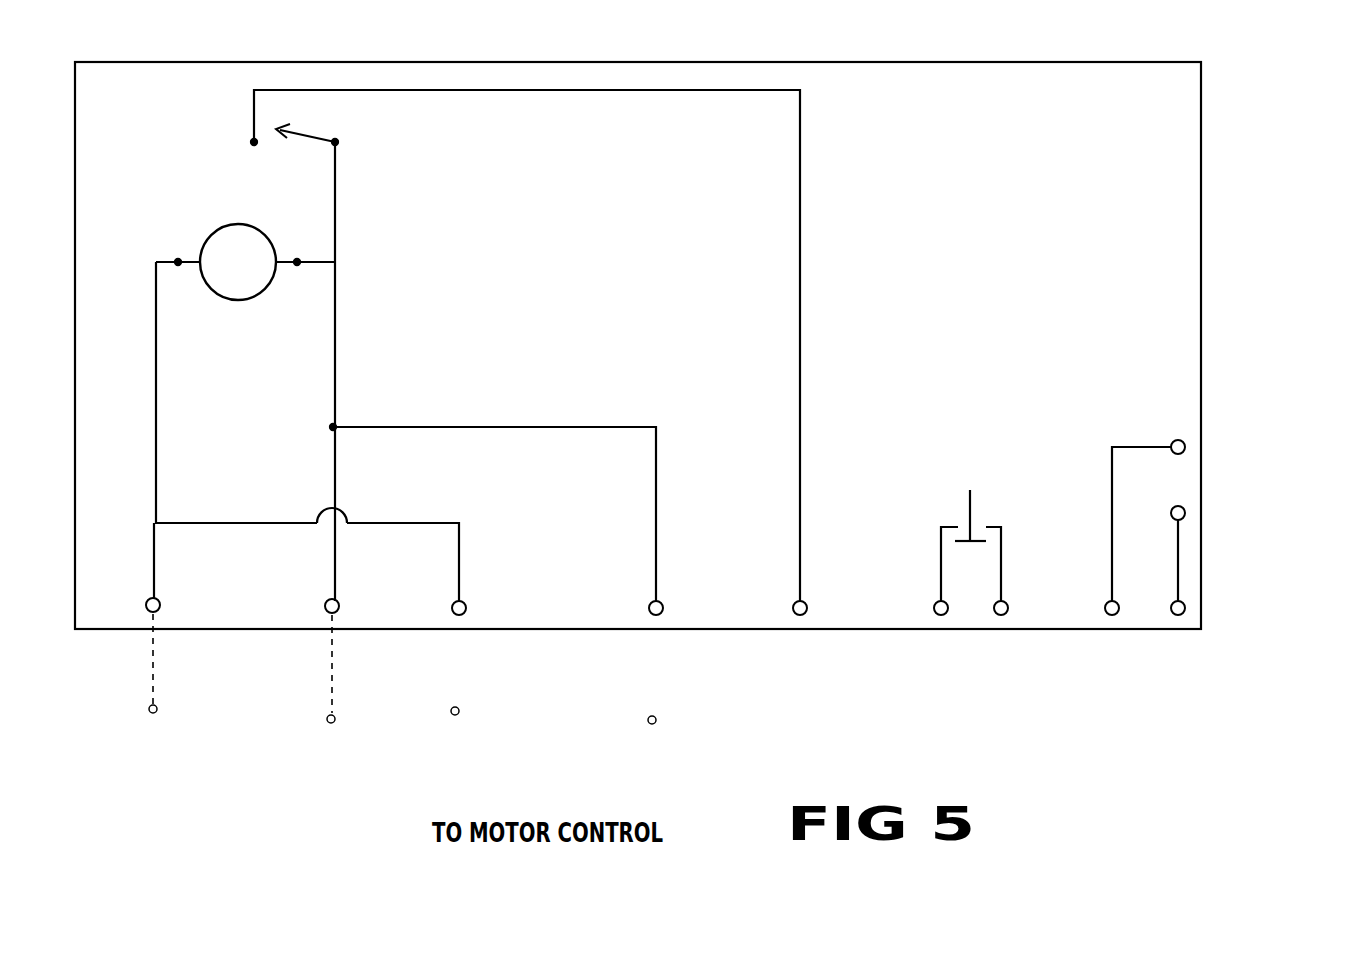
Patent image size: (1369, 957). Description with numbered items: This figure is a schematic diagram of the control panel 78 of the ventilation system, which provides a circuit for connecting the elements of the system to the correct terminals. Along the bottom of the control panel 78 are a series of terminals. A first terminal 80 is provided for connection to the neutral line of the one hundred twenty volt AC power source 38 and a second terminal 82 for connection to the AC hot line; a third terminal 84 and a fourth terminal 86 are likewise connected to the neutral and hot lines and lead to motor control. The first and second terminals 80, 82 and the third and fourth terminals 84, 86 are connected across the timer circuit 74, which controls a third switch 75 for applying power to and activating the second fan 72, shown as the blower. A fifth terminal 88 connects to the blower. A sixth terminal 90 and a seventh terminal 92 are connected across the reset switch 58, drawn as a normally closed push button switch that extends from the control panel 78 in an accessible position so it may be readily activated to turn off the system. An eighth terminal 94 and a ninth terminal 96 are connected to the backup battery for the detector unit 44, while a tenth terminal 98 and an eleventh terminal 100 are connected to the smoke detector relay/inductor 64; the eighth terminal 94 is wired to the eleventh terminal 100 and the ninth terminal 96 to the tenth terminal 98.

The control panel 78 is at (638, 322).
The third switch 75 is at (298, 349).
The timer circuit 74 is at (221, 294).
The first terminal 80 is at (246, 487).
The second terminal 82 is at (353, 657).
The third terminal 84 is at (428, 619).
The fourth terminal 86 is at (519, 574).
The fifth terminal 88 is at (551, 358).
The sixth terminal 90 is at (922, 609).
The seventh terminal 92 is at (1022, 609).
The eighth terminal 94 is at (1119, 536).
The ninth terminal 96 is at (1160, 573).
The tenth terminal 98 is at (1177, 497).
The eleventh terminal 100 is at (1174, 430).
The smoke detector relay/inductor 64 is at (1289, 481).
The detector unit 44 is at (1232, 635).
The second fan 72 is at (804, 758).
The reset switch 58 is at (987, 589).
The AC power source 38 is at (285, 756).